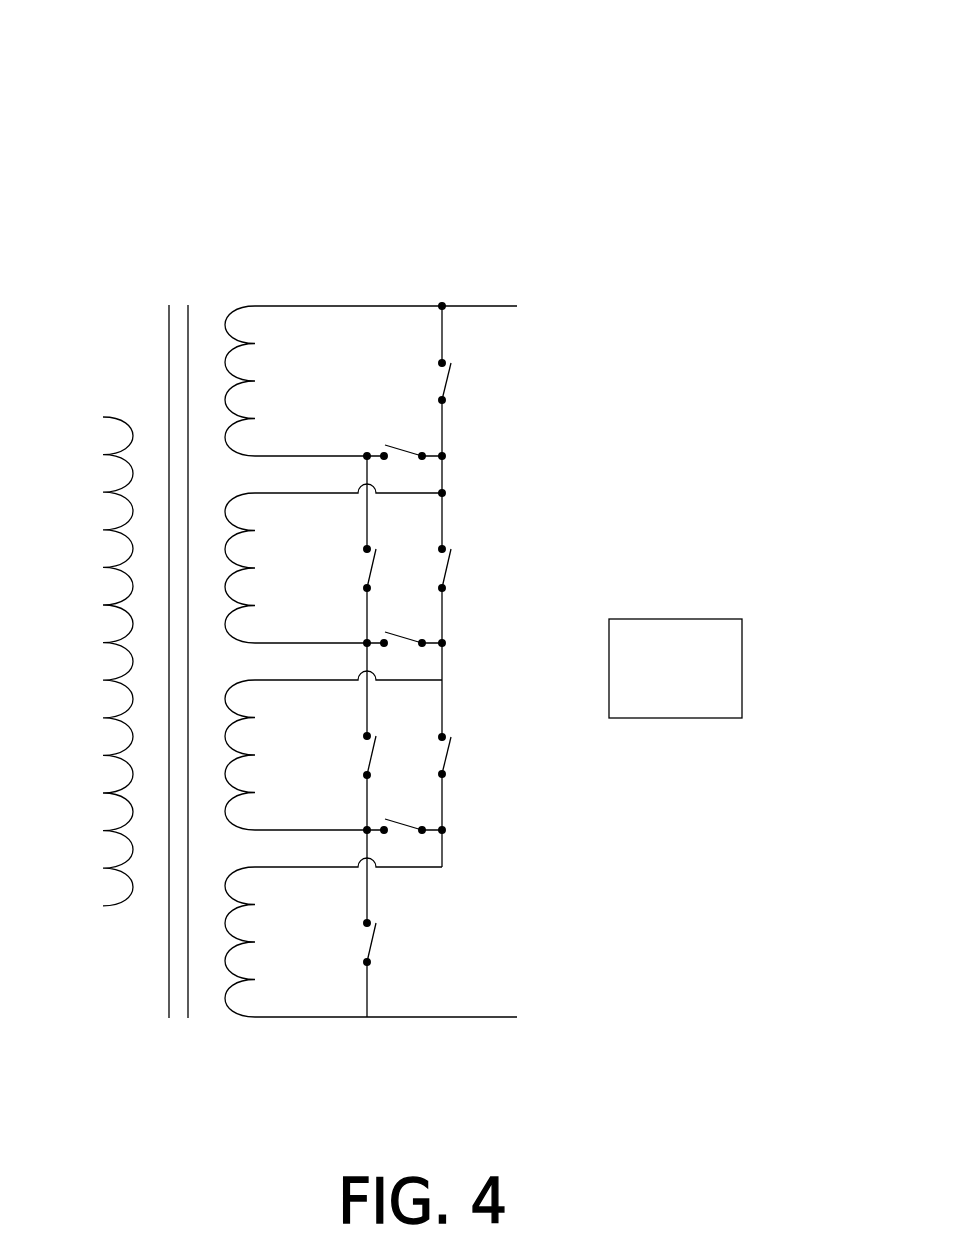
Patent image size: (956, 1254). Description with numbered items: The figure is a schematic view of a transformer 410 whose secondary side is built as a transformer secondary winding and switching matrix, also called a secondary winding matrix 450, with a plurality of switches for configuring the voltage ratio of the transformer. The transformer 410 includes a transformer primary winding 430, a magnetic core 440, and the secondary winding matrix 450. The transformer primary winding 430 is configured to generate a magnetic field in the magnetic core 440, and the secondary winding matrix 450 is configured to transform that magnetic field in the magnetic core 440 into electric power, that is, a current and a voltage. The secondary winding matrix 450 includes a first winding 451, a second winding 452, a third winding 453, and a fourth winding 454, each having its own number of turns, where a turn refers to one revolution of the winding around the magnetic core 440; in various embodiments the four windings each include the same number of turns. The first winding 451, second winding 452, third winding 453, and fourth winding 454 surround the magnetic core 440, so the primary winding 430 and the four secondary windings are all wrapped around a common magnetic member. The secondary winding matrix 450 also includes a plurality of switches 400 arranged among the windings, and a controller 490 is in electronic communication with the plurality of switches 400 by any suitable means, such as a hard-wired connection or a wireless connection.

The plurality of switches 400 is at (588, 332).
The transformer 410 is at (235, 136).
The transformer primary winding 430 is at (138, 292).
The magnetic core 440 is at (213, 292).
The secondary winding matrix 450 is at (483, 292).
The first winding 451 is at (255, 381).
The second winding 452 is at (255, 568).
The third winding 453 is at (255, 755).
The fourth winding 454 is at (255, 942).
The controller 490 is at (742, 657).